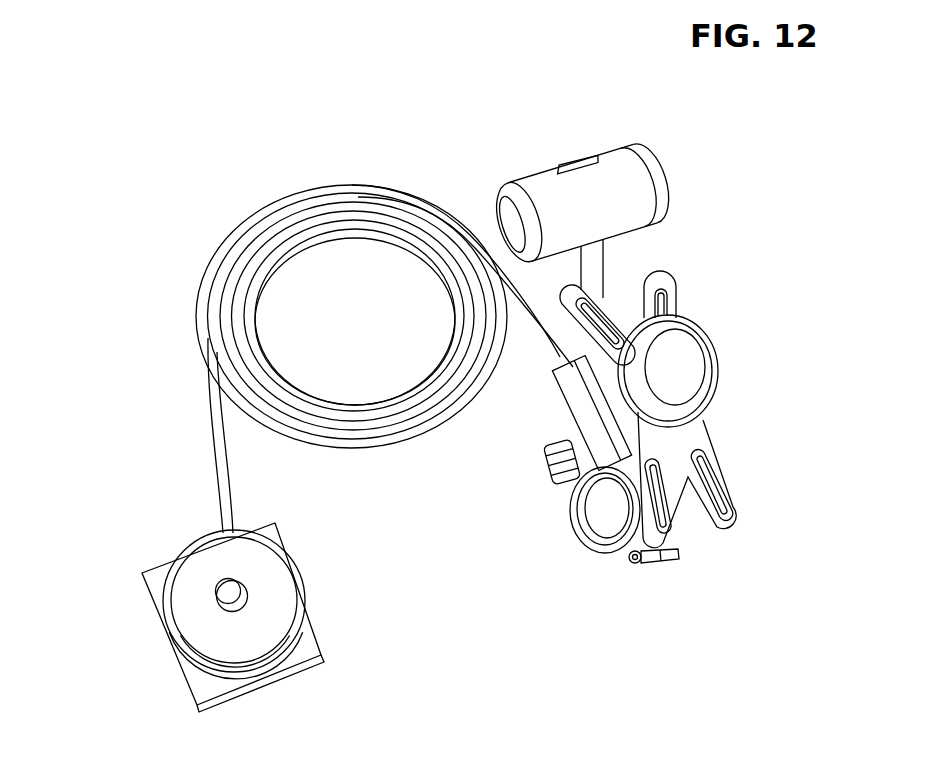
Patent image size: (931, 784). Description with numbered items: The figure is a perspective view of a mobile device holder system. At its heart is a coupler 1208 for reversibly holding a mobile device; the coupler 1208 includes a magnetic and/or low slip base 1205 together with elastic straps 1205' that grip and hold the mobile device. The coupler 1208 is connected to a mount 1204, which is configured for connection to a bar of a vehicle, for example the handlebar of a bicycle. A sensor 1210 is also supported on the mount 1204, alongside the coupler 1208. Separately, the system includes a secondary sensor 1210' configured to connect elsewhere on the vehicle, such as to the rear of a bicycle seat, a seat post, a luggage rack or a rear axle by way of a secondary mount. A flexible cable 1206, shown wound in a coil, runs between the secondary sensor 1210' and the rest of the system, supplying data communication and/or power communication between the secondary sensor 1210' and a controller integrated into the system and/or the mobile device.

The mount 1204 is at (583, 467).
The base 1205 is at (695, 338).
The elastic straps 1205' is at (686, 409).
The flexible cable 1206 is at (283, 225).
The coupler 1208 is at (758, 342).
The sensor 1210 is at (582, 179).
The secondary sensor 1210' is at (173, 641).